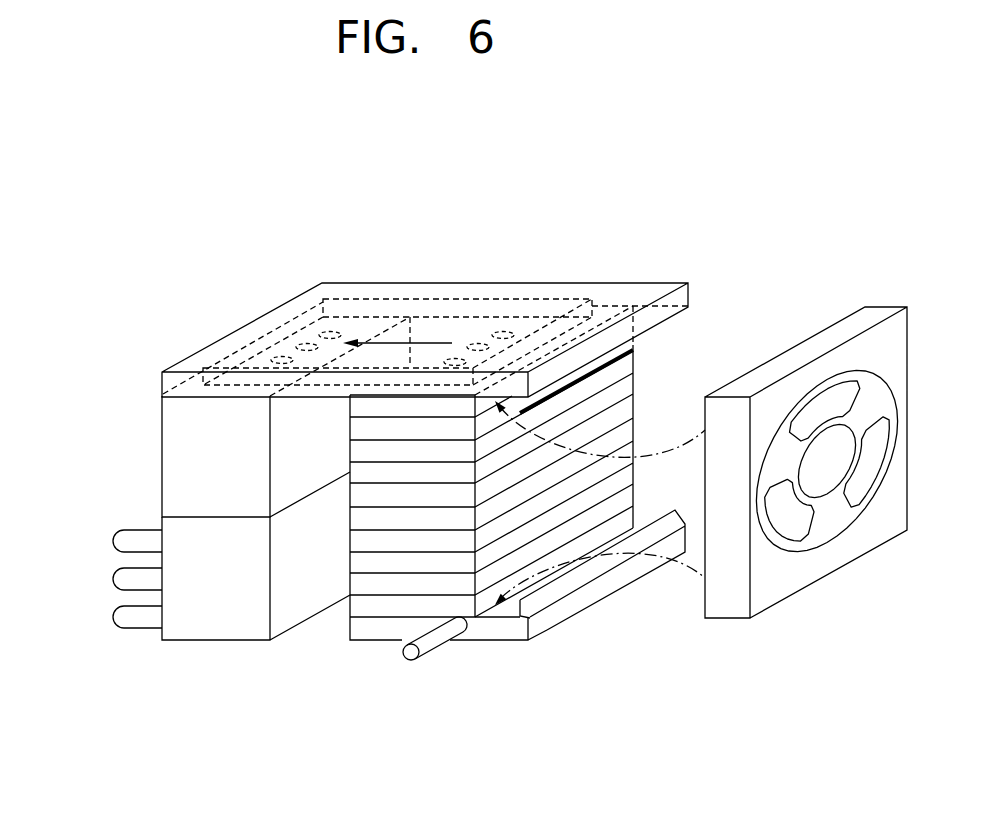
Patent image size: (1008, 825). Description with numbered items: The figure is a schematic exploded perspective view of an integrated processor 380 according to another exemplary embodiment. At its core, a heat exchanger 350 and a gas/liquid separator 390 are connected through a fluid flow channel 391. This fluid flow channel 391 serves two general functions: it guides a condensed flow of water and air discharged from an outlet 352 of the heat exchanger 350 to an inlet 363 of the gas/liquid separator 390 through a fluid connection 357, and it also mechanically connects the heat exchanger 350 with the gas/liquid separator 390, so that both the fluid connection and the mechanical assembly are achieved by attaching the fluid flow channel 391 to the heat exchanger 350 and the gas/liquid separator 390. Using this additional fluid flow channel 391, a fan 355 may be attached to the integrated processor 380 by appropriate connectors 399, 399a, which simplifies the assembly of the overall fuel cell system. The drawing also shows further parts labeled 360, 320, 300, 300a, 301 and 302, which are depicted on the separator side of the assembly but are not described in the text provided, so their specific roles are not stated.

The integrated processor 380 is at (672, 222).
The fluid flow channel 391 is at (190, 363).
The fluid connection 357 is at (390, 299).
The inlet 363 is at (304, 345).
The outlet 352 is at (476, 345).
The connector 399a is at (521, 403).
The gas/liquid separator 390 is at (198, 555).
The driver housing upper part 360 is at (177, 463).
The connector body 320 is at (212, 630).
The first lead terminal 300a is at (114, 541).
The third lead terminal 302 is at (114, 580).
The second lead terminal 301 is at (114, 618).
The heat exchanger 350 is at (369, 607).
The terminal pin 300 is at (433, 642).
The connector 399 is at (542, 625).
The fan 355 is at (767, 590).